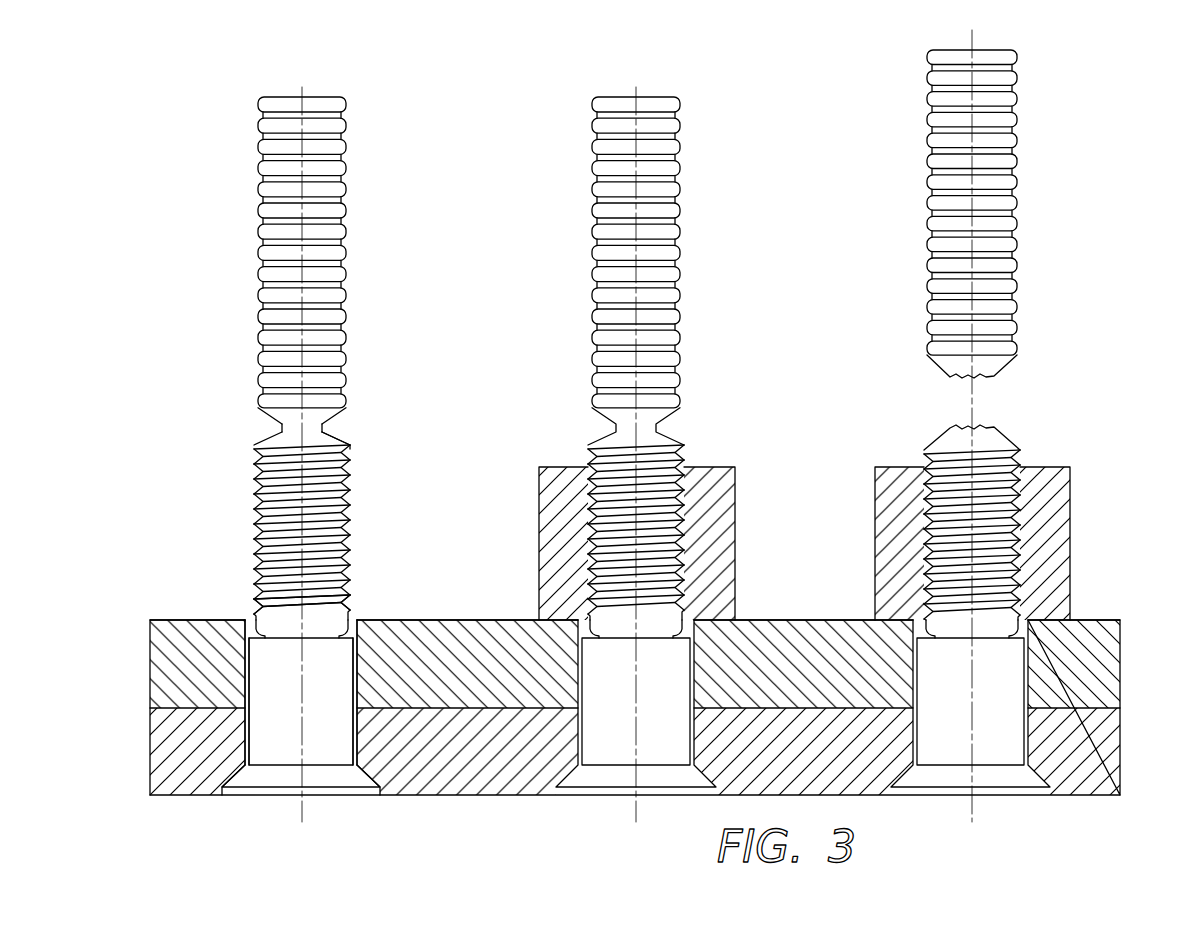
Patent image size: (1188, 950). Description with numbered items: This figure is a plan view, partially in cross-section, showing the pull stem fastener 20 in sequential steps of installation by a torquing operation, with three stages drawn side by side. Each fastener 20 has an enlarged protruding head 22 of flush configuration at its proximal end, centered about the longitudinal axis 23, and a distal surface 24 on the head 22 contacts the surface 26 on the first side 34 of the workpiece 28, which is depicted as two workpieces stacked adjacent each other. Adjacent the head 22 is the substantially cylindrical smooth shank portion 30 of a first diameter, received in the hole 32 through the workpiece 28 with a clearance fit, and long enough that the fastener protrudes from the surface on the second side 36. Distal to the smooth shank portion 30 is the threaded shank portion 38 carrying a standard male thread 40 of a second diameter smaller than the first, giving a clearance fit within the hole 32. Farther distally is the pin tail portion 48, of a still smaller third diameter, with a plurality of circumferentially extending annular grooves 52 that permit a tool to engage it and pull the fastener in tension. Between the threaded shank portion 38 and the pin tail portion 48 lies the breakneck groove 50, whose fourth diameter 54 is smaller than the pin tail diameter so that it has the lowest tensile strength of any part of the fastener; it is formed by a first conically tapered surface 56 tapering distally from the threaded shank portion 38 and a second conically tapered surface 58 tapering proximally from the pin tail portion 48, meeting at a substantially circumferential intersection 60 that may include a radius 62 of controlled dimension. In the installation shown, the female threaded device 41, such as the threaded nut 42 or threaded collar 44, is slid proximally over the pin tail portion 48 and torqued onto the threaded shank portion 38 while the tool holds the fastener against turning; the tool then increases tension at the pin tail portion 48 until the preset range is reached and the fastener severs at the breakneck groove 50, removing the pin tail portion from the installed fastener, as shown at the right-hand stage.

The pull stem fastener 20 is at (287, 430).
The head 22 is at (302, 706).
The longitudinal axis 23 is at (297, 78).
The distal surface 24 is at (236, 778).
The surface 26 is at (352, 792).
The workpiece 28 is at (604, 668).
The smooth shank portion 30 is at (245, 683).
The hole 32 is at (357, 652).
The first side 34 is at (492, 806).
The second side 36 is at (468, 577).
The threaded shank portion 38 is at (275, 598).
The male thread 40 is at (262, 541).
The female threaded device 41 is at (846, 503).
The threaded nut 42 is at (926, 514).
The threaded collar 44 is at (735, 497).
The pin tail portion 48 is at (322, 223).
The breakneck groove 50 is at (261, 398).
The annular grooves 52 is at (342, 171).
The fourth diameter 54 is at (261, 424).
The first conically tapered surface 56 is at (357, 459).
The second conically tapered surface 58 is at (323, 405).
The circumferential intersection 60 is at (255, 391).
The radius 62 is at (255, 391).